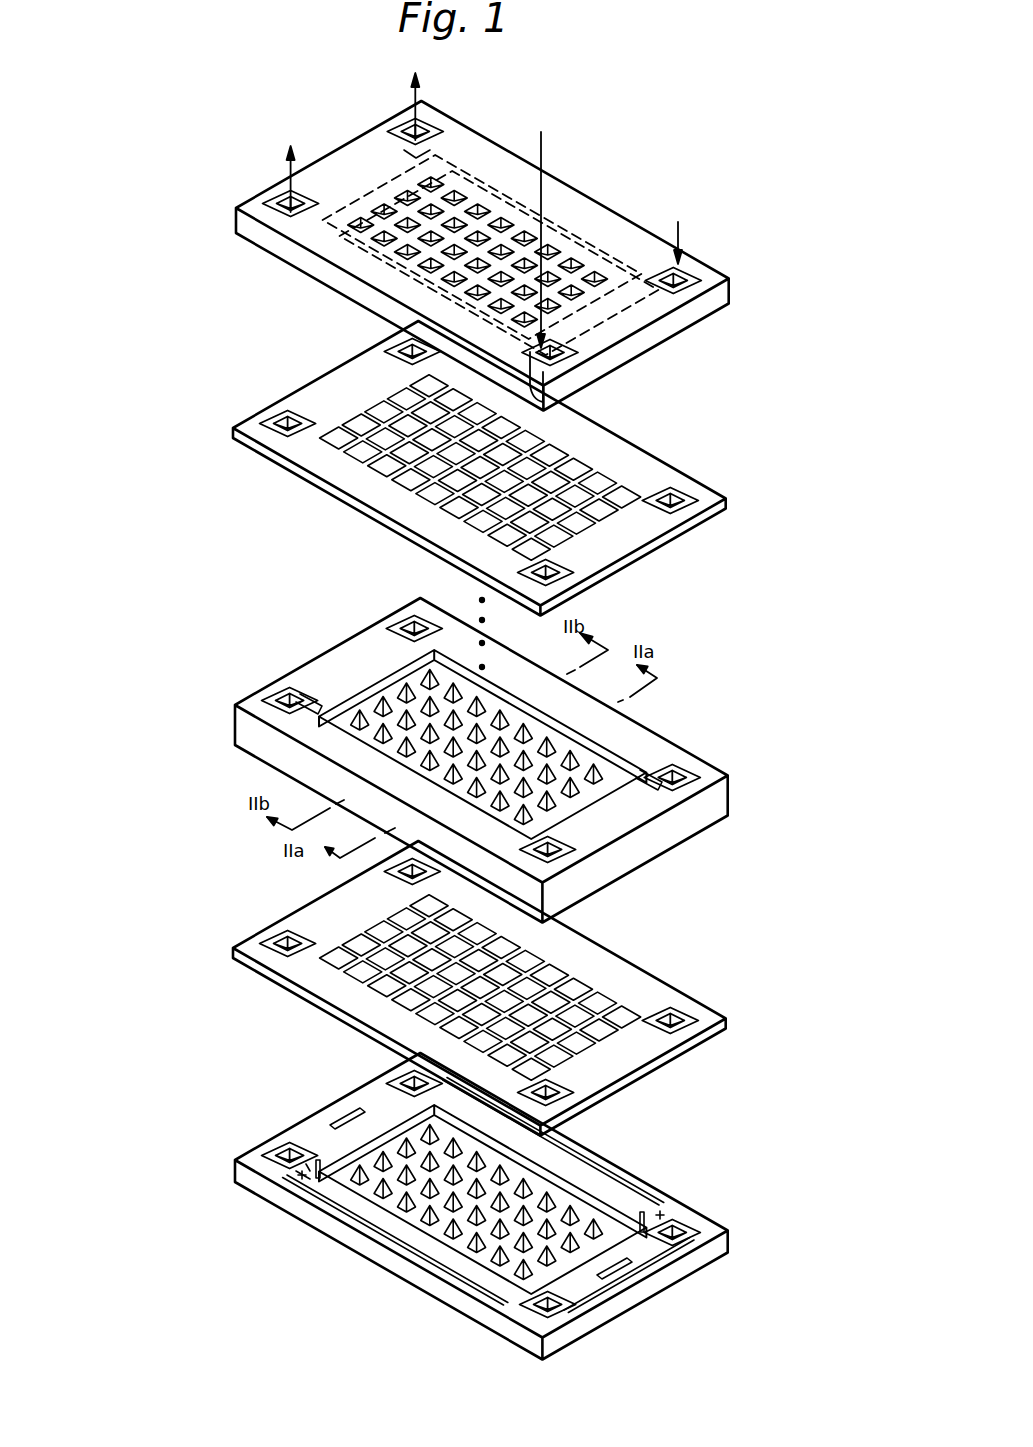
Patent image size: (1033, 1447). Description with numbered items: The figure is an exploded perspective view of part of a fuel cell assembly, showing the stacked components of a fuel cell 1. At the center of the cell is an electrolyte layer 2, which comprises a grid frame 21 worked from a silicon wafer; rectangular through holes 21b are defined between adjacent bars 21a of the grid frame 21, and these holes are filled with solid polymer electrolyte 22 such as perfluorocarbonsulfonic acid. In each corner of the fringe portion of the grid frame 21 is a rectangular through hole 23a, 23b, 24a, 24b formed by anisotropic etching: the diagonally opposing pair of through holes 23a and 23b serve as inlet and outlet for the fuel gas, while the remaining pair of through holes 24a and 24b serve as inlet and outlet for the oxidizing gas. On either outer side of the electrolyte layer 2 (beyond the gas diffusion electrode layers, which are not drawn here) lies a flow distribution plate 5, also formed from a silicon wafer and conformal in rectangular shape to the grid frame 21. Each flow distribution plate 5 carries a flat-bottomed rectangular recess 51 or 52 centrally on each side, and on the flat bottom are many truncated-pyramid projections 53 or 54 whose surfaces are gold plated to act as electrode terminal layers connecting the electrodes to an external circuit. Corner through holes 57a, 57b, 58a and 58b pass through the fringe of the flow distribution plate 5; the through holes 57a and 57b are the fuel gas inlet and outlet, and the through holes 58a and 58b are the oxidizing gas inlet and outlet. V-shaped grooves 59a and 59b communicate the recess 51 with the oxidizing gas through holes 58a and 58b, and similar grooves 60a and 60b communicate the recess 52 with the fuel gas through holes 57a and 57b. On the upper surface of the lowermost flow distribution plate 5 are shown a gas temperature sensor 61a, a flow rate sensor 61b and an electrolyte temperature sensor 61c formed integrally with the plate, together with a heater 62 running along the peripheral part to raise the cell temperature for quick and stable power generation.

The fuel cell 1 is at (140, 660).
The electrolyte layer 2 is at (670, 452).
The flow distribution plate 5 is at (710, 297).
The grid frame 21 is at (643, 1048).
The bars 21a is at (400, 988).
The rectangular through holes 21b is at (348, 943).
The solid polymer electrolyte 22 is at (585, 978).
The through hole 23a is at (567, 1078).
The through hole 23b is at (400, 868).
The through hole 24a is at (677, 1018).
The through hole 24b is at (285, 940).
The rectangular recess 51 is at (363, 735).
The rectangular recess 52 is at (335, 242).
The projections 53 is at (507, 720).
The projections 54 is at (407, 253).
The through hole 57a is at (567, 845).
The through hole 57b is at (405, 628).
The through hole 58a is at (665, 780).
The through hole 58b is at (282, 692).
The groove 59a is at (650, 773).
The groove 59b is at (303, 705).
The groove 60a is at (555, 398).
The groove 60b is at (410, 157).
The gas temperature sensor 61a is at (300, 1180).
The flow rate sensor 61b is at (292, 1150).
The electrolyte temperature sensor 61c is at (345, 1115).
The heater 62 is at (318, 1135).